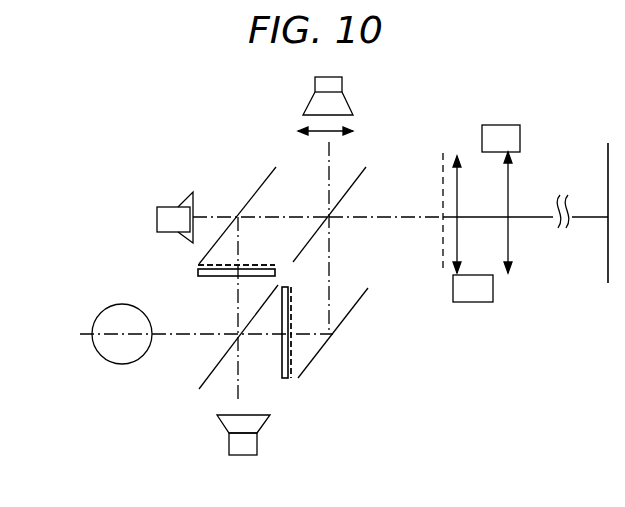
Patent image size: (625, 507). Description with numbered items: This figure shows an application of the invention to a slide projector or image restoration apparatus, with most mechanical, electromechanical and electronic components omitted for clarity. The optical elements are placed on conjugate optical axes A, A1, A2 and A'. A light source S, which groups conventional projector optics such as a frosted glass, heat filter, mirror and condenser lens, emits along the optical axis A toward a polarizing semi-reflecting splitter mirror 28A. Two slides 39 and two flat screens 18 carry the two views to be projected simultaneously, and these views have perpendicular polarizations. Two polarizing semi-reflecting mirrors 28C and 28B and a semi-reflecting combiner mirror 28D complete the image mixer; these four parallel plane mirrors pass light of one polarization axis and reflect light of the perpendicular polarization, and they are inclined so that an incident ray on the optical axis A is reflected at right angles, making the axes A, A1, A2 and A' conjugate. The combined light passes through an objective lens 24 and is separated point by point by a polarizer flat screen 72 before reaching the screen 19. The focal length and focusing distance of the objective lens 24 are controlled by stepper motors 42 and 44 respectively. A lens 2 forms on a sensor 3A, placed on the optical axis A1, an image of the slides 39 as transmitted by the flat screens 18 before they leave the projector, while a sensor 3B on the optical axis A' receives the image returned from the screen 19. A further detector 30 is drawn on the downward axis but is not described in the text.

The lens 2 is at (313, 132).
The sensor 3A is at (328, 96).
The sensor 3B is at (175, 217).
The flat screen 18 is at (276, 267).
The screen 19 is at (607, 258).
The objective lens 24 is at (458, 243).
The polarizing semi-reflecting splitter mirror 28A is at (216, 379).
The polarizing semi-reflecting mirror 28B is at (351, 312).
The polarizing semi-reflecting mirror 28C is at (272, 170).
The semi-reflecting combiner mirror 28D is at (366, 170).
The detector 30 is at (243, 435).
The slide 39 is at (198, 276).
The stepper motor 42 is at (473, 229).
The stepper motor 44 is at (501, 199).
The flat screen 72 is at (442, 160).
The light source S is at (122, 334).
The optical axis A is at (200, 316).
The optical axis A1 is at (331, 240).
The optical axis A2 is at (240, 228).
The optical axis A' is at (386, 236).